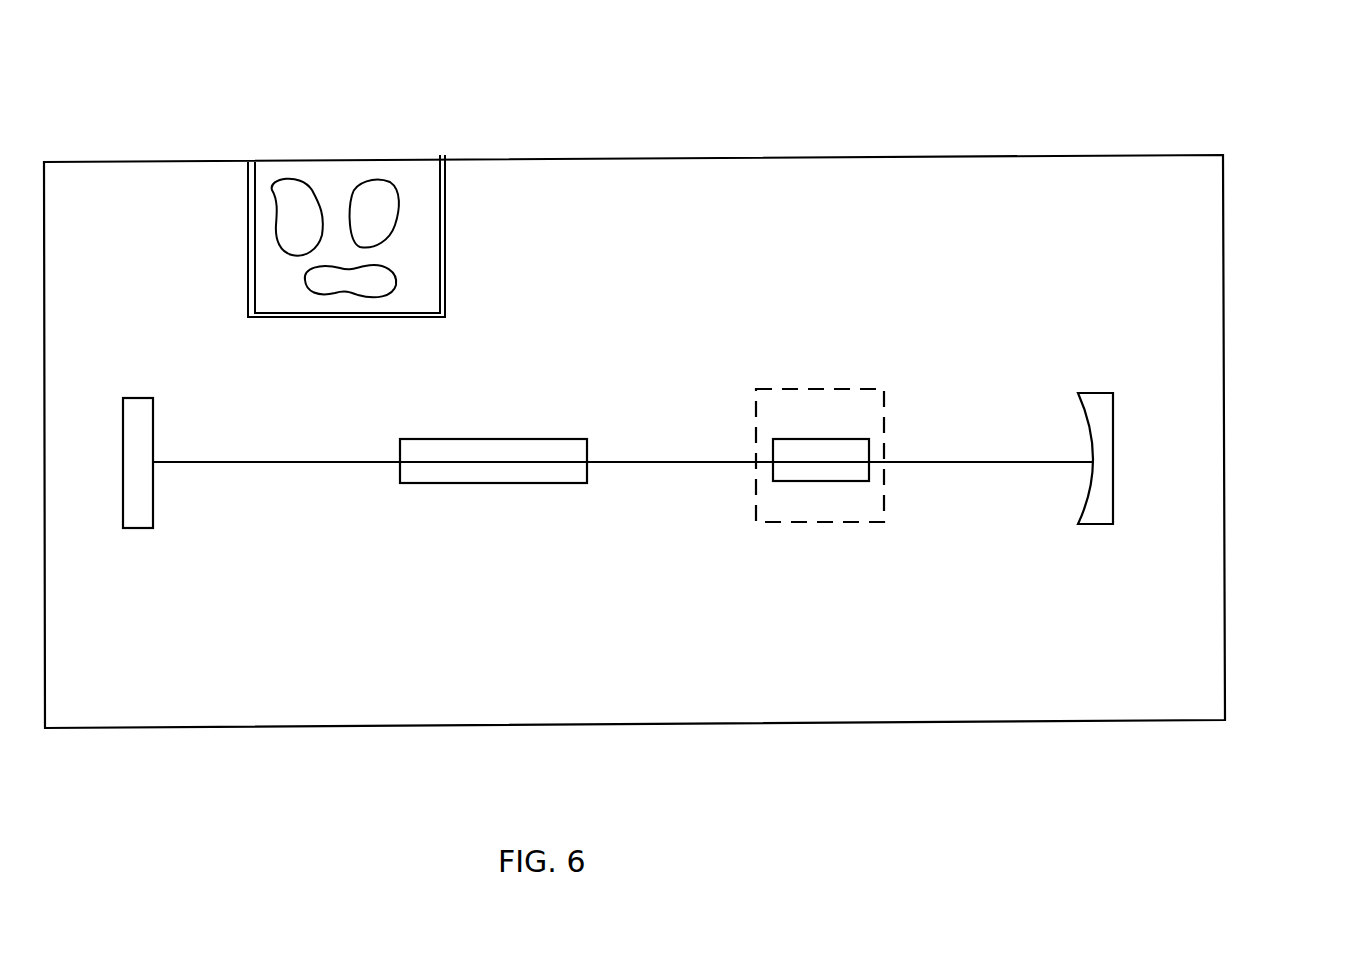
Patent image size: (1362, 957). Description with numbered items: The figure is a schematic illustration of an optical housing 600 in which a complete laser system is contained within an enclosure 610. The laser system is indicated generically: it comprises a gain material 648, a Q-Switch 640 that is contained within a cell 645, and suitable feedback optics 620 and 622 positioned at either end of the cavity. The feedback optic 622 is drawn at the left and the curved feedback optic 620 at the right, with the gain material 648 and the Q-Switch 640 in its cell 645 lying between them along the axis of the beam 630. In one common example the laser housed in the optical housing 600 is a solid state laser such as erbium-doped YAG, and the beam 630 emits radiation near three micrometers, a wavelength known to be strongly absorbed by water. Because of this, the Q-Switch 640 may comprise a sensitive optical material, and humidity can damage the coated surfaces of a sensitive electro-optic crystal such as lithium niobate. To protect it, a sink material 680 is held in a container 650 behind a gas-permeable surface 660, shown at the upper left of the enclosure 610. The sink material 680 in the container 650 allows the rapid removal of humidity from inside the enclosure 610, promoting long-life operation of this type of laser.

The optical housing 600 is at (945, 68).
The enclosure 610 is at (1222, 270).
The feedback optics 620 is at (1098, 525).
The feedback optics 622 is at (135, 530).
The beam 630 is at (276, 465).
The Q-Switch 640 is at (835, 482).
The cell 645 is at (862, 390).
The gain material 648 is at (498, 484).
The container 650 is at (273, 278).
The gas-permeable surface 660 is at (447, 265).
The sink material 680 is at (384, 212).